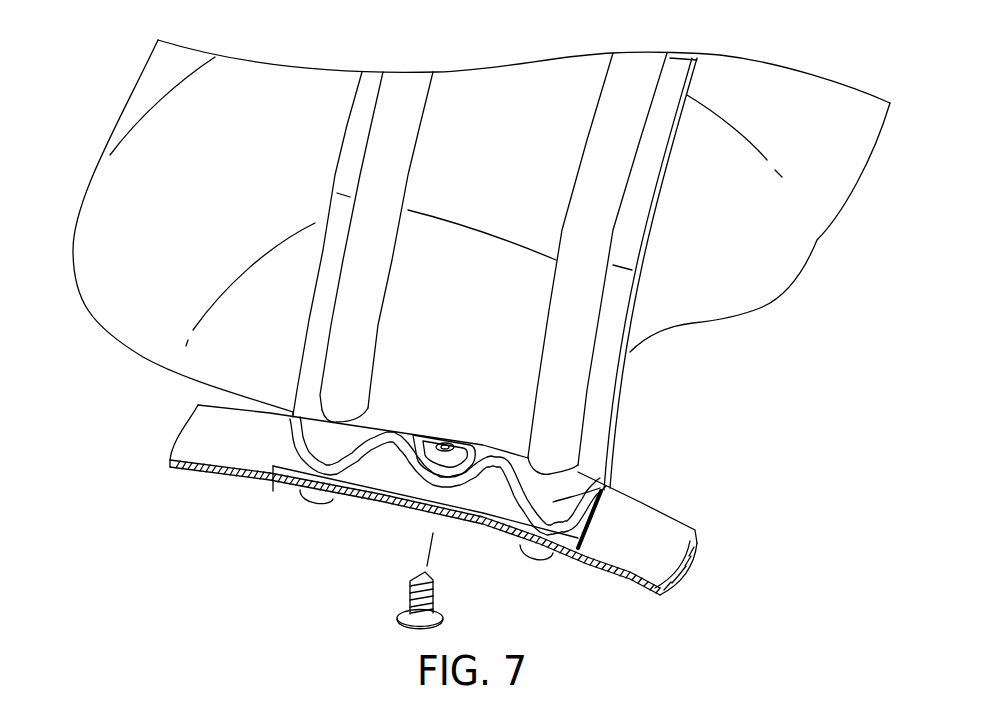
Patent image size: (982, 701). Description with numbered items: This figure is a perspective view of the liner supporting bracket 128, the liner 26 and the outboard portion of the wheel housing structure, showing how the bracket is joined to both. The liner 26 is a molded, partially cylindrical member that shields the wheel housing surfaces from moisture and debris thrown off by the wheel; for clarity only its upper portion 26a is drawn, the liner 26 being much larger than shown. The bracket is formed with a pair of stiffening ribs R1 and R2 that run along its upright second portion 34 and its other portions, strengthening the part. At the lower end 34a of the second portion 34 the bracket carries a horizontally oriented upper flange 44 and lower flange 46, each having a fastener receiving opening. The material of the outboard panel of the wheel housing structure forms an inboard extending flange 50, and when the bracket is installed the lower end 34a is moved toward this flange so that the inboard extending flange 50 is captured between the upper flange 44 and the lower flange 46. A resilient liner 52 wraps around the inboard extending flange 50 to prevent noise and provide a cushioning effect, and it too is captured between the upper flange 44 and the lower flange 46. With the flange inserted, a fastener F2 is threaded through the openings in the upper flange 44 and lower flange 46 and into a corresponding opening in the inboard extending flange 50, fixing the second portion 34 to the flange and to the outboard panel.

The liner supporting bracket 128 is at (642, 55).
The liner 26 is at (830, 117).
The upper portion of the liner 26a is at (710, 77).
The stiffening rib R1 is at (383, 158).
The stiffening rib R2 is at (597, 188).
The second portion 34 is at (590, 387).
The lower end of the second portion 34a is at (295, 407).
The upper flange 44 is at (600, 483).
The lower flange 46 is at (533, 565).
The inboard extending flange 50 is at (238, 437).
The resilient liner 52 is at (570, 528).
The fastener F2 is at (402, 608).